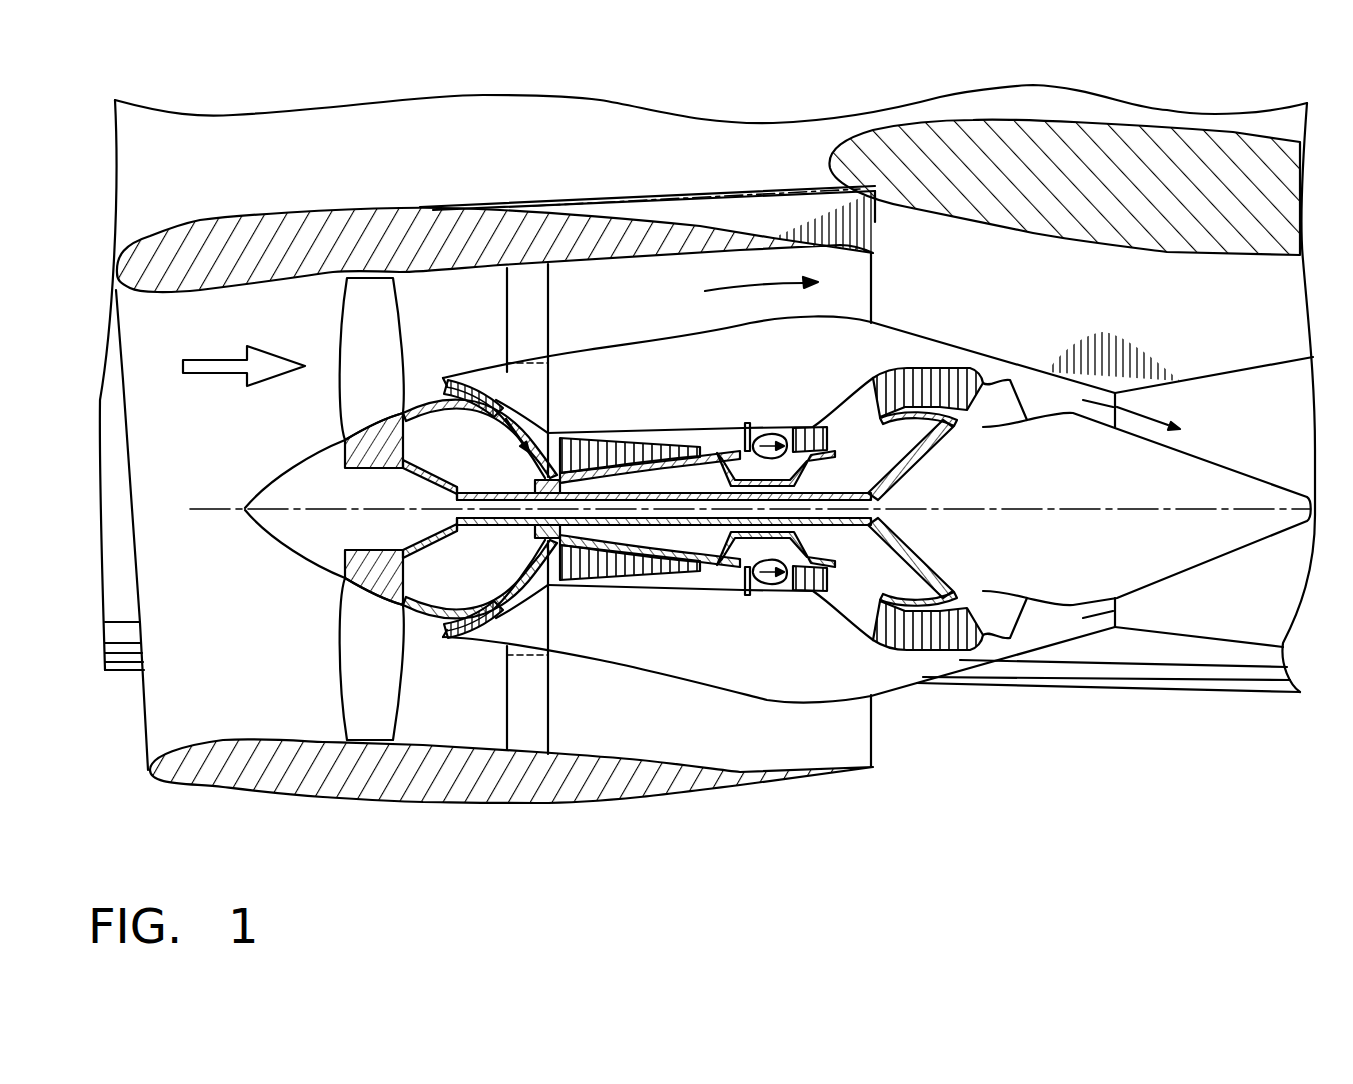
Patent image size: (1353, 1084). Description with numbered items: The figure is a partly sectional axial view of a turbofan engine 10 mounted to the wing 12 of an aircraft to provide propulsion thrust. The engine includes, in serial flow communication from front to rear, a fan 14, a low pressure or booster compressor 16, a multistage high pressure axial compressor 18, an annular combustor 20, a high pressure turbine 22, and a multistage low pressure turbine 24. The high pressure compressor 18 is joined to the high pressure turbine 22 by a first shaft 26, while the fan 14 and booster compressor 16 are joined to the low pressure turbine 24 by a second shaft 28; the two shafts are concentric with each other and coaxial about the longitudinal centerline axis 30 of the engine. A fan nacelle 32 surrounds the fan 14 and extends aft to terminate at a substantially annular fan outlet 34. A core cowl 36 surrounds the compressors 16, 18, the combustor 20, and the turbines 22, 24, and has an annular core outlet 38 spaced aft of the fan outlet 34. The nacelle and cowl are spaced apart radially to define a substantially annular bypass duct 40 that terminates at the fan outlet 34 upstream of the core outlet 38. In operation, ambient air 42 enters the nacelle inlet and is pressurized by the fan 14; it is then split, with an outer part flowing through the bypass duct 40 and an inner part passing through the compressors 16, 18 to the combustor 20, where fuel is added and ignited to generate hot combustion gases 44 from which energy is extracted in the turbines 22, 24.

The turbofan engine 10 is at (286, 212).
The wing 12 is at (930, 120).
The fan 14 is at (338, 401).
The booster compressor 16 is at (485, 378).
The high pressure compressor 18 is at (673, 443).
The combustor 20 is at (773, 437).
The high pressure turbine 22 is at (803, 426).
The low pressure turbine 24 is at (942, 370).
The first shaft 26 is at (628, 580).
The second shaft 28 is at (656, 562).
The centerline axis 30 is at (1095, 508).
The fan nacelle 32 is at (345, 804).
The fan outlet 34 is at (875, 283).
The core cowl 36 is at (790, 702).
The core outlet 38 is at (1118, 602).
The bypass duct 40 is at (645, 315).
The ambient air 42 is at (215, 378).
The hot combustion gases 44 is at (1140, 410).